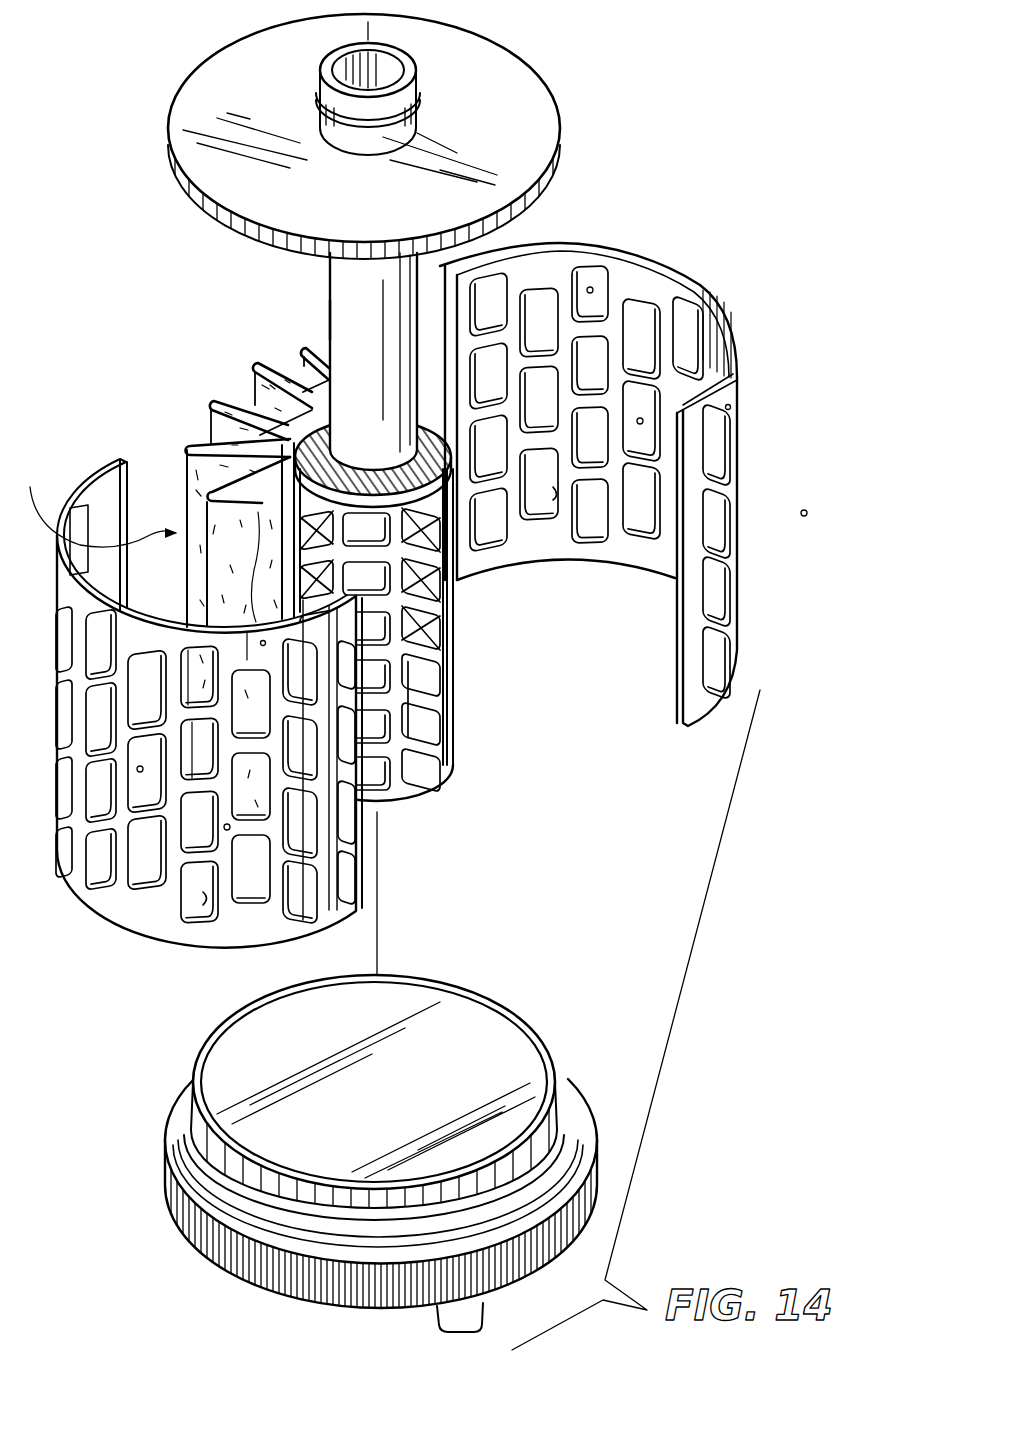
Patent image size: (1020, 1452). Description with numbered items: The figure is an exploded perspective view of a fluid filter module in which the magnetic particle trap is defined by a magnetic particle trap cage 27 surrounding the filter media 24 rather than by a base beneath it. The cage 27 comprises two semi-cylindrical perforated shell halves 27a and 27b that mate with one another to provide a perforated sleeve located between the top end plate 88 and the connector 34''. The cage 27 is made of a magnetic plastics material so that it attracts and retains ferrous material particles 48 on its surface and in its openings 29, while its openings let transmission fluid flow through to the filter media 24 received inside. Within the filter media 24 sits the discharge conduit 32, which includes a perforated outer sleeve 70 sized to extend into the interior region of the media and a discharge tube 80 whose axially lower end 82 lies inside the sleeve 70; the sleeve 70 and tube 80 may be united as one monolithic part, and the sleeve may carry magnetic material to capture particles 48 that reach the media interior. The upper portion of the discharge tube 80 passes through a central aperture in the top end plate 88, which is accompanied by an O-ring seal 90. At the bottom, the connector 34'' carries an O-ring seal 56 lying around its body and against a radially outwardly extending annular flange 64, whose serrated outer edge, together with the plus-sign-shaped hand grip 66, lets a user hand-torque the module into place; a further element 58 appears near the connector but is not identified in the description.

The filter media 24 is at (225, 389).
The magnetic particle trap cage 27 is at (421, 581).
The semi-cylindrical perforated shell half 27a is at (119, 906).
The semi-cylindrical perforated shell half 27b is at (737, 333).
The openings 29 is at (554, 488).
The discharge conduit 32 is at (322, 318).
The connector 34'' is at (362, 1164).
The ferrous material particles 48 is at (592, 290).
The O-ring seal 56 is at (403, 1195).
The thread ring 58 is at (267, 1195).
The annular flange 64 is at (257, 1272).
The hand grip 66 is at (457, 1318).
The perforated outer sleeve 70 is at (452, 716).
The discharge tube 80 is at (353, 296).
The axially lower end 82 is at (418, 766).
The top end plate 88 is at (549, 123).
The O-ring seal 90 is at (416, 104).